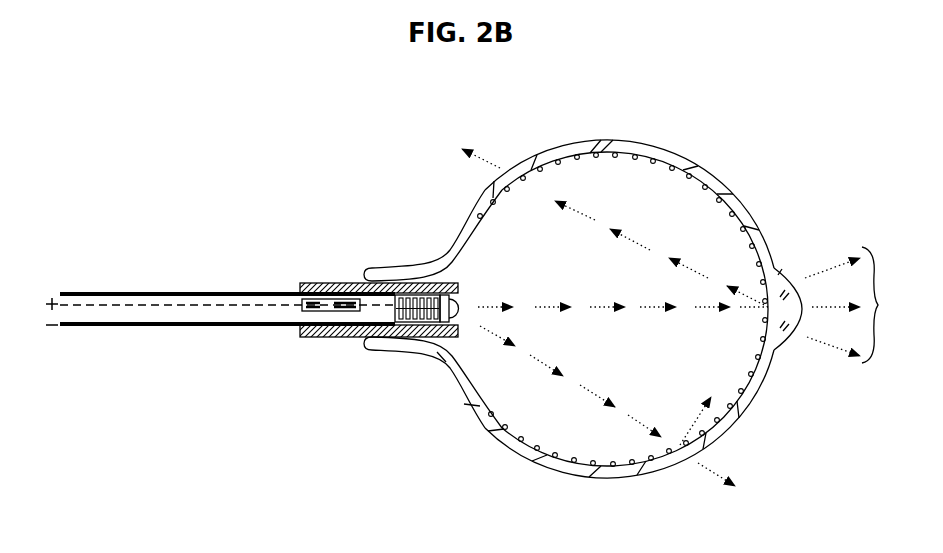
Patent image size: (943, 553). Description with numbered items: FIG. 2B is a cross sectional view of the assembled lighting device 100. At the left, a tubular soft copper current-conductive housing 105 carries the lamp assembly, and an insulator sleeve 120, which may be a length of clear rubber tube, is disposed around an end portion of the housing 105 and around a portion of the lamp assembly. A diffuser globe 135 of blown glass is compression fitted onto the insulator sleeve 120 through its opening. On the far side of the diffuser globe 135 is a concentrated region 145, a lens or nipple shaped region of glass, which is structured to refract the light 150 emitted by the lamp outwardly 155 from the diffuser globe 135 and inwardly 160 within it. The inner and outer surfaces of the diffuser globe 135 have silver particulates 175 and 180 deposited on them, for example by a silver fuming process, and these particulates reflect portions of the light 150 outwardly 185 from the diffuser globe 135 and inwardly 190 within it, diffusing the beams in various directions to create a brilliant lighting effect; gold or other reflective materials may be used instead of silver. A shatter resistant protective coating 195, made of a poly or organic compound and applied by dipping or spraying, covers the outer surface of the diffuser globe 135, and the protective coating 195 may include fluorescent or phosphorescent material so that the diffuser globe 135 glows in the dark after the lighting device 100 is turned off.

The lighting device 100 is at (323, 207).
The housing 105 is at (200, 292).
The insulator sleeve 120 is at (319, 283).
The diffuser globe 135 is at (709, 171).
The concentrated region 145 is at (794, 343).
The light 150 is at (601, 305).
The light refracted outwardly 155 is at (878, 303).
The light refracted inwardly 160 is at (624, 233).
The silver particulates 175 is at (571, 446).
The silver particulates 180 is at (554, 480).
The light reflected outwardly 185 is at (712, 472).
The light reflected inwardly 190 is at (696, 420).
The shatter resistant protective coating 195 is at (650, 140).